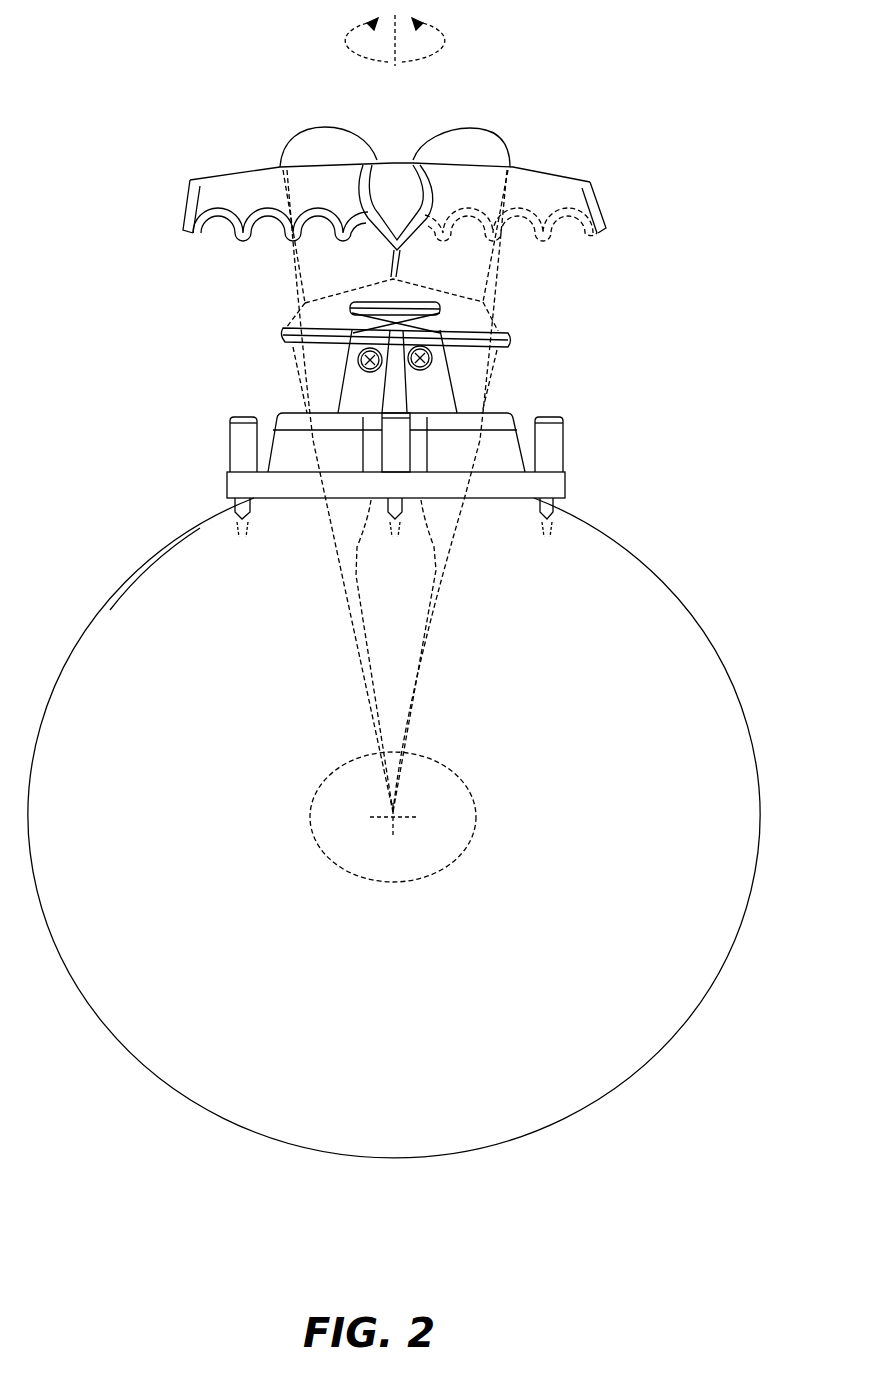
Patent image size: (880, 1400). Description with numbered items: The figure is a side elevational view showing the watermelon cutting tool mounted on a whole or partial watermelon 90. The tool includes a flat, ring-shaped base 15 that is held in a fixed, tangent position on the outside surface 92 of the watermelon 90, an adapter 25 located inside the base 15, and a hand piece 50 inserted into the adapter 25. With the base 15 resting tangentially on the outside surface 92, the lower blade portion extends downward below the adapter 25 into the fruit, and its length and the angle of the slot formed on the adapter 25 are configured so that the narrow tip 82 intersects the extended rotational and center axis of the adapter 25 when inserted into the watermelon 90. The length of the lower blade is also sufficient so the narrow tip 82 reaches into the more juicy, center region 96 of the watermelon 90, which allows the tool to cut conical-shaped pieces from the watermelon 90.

The hand piece 50 is at (490, 112).
The adapter 25 is at (512, 336).
The base 15 is at (570, 482).
The watermelon 90 is at (666, 582).
The outside surface 92 is at (145, 562).
The center region 96 is at (472, 786).
The narrow tip 82 is at (395, 818).